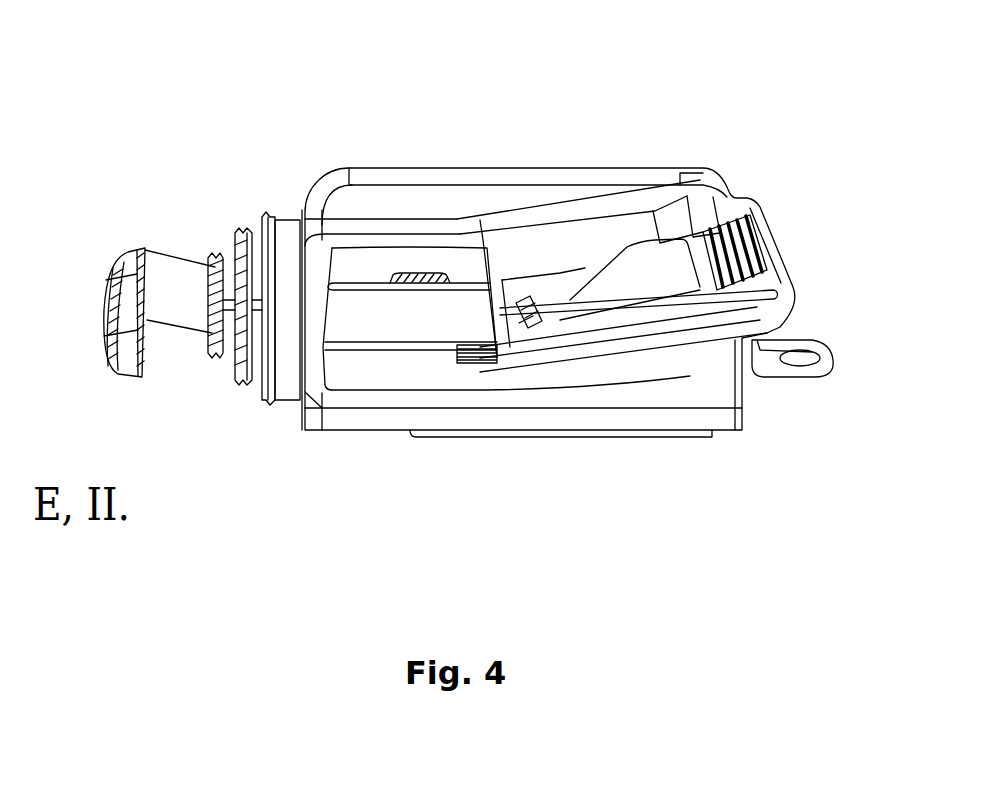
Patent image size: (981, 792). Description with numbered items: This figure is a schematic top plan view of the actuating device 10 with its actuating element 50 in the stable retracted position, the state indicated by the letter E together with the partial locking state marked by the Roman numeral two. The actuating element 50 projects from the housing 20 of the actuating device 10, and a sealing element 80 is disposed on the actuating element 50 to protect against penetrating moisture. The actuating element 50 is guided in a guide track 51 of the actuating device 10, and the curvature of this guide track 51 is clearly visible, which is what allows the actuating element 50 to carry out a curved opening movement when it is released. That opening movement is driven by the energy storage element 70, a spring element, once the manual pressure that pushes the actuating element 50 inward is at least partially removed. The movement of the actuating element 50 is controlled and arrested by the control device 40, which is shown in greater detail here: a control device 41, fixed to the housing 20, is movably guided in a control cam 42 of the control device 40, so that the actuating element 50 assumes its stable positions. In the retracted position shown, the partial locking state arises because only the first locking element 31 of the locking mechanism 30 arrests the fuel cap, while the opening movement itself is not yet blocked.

The actuating device 10 is at (779, 418).
The housing 20 is at (577, 165).
The locking mechanism 30 is at (138, 260).
The first locking element 31 is at (140, 270).
The control device 40 is at (540, 358).
The control device 41 is at (615, 303).
The control cam 42 is at (537, 327).
The actuating element 50 is at (403, 303).
The guide track 51 is at (457, 224).
The energy storage element 70 is at (758, 205).
The sealing element 80 is at (248, 377).